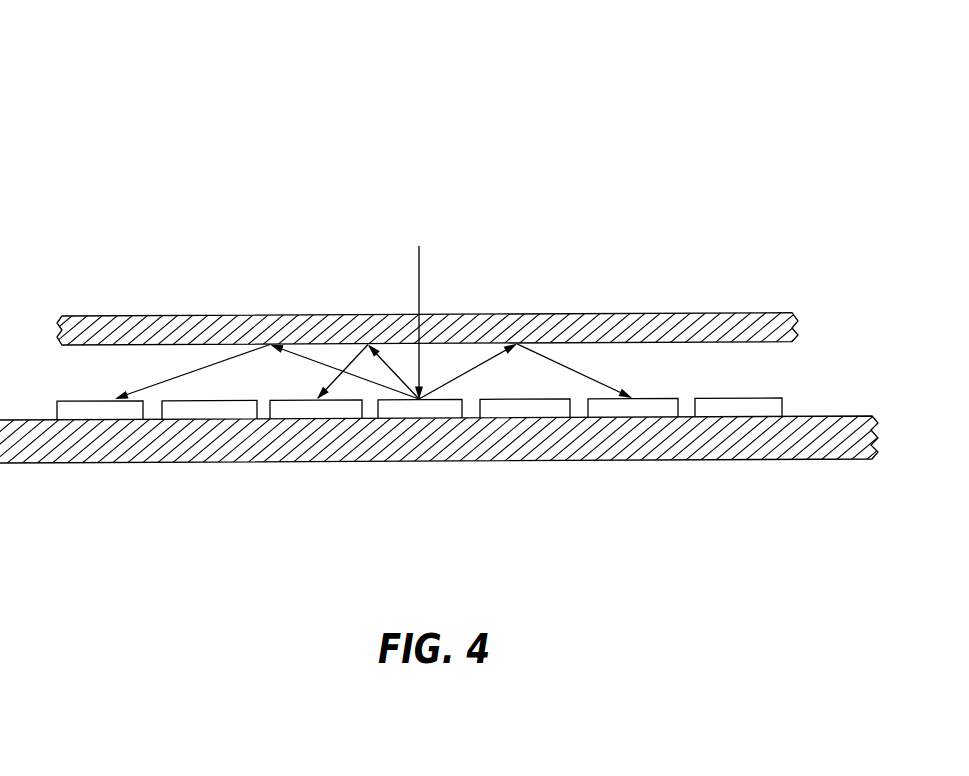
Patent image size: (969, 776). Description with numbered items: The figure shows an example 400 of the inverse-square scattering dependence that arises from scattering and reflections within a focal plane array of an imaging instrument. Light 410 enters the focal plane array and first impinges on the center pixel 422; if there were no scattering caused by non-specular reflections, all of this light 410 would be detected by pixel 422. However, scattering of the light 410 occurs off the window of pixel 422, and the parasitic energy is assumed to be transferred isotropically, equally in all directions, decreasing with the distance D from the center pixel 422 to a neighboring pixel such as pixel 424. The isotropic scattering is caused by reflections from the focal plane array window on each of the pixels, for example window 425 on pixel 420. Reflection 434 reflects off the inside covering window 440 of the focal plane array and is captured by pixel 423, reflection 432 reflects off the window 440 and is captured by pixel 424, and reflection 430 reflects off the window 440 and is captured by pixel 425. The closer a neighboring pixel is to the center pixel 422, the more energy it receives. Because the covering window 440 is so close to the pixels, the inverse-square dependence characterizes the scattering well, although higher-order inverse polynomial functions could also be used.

The light emitting device assembly 400 is at (175, 145).
The light 410 is at (419, 262).
The pixel 420 is at (758, 407).
The center pixel 422 is at (433, 410).
The pixel 423 is at (610, 407).
The pixel 424 is at (288, 412).
The window 425 is at (82, 412).
The reflection 430 is at (322, 360).
The reflection 432 is at (388, 366).
The reflection 434 is at (480, 368).
The covering window 440 is at (595, 314).